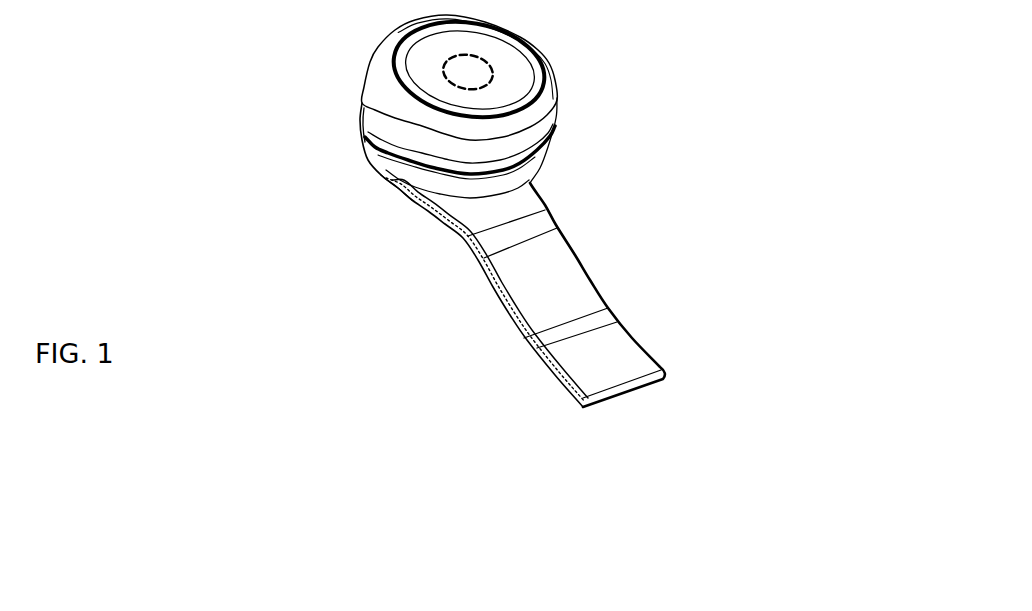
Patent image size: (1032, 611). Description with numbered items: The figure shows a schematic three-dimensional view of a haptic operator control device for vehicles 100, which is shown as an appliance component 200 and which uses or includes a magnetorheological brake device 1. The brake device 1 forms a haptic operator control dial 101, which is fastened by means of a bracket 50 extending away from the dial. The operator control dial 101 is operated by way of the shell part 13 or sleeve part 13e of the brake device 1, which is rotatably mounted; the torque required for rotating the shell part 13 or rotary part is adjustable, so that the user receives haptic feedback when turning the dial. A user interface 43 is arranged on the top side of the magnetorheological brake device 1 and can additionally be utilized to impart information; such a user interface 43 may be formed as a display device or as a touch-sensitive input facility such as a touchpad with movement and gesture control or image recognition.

The magnetorheological brake device 1 is at (527, 30).
The haptic operator control dial 101 is at (353, 95).
The user interface 43 is at (503, 78).
The shell part 13 is at (565, 122).
The sleeve part 13e is at (525, 147).
The bracket 50 is at (567, 280).
The haptic operator control device for vehicles 100 is at (378, 202).
The appliance component 200 is at (645, 170).